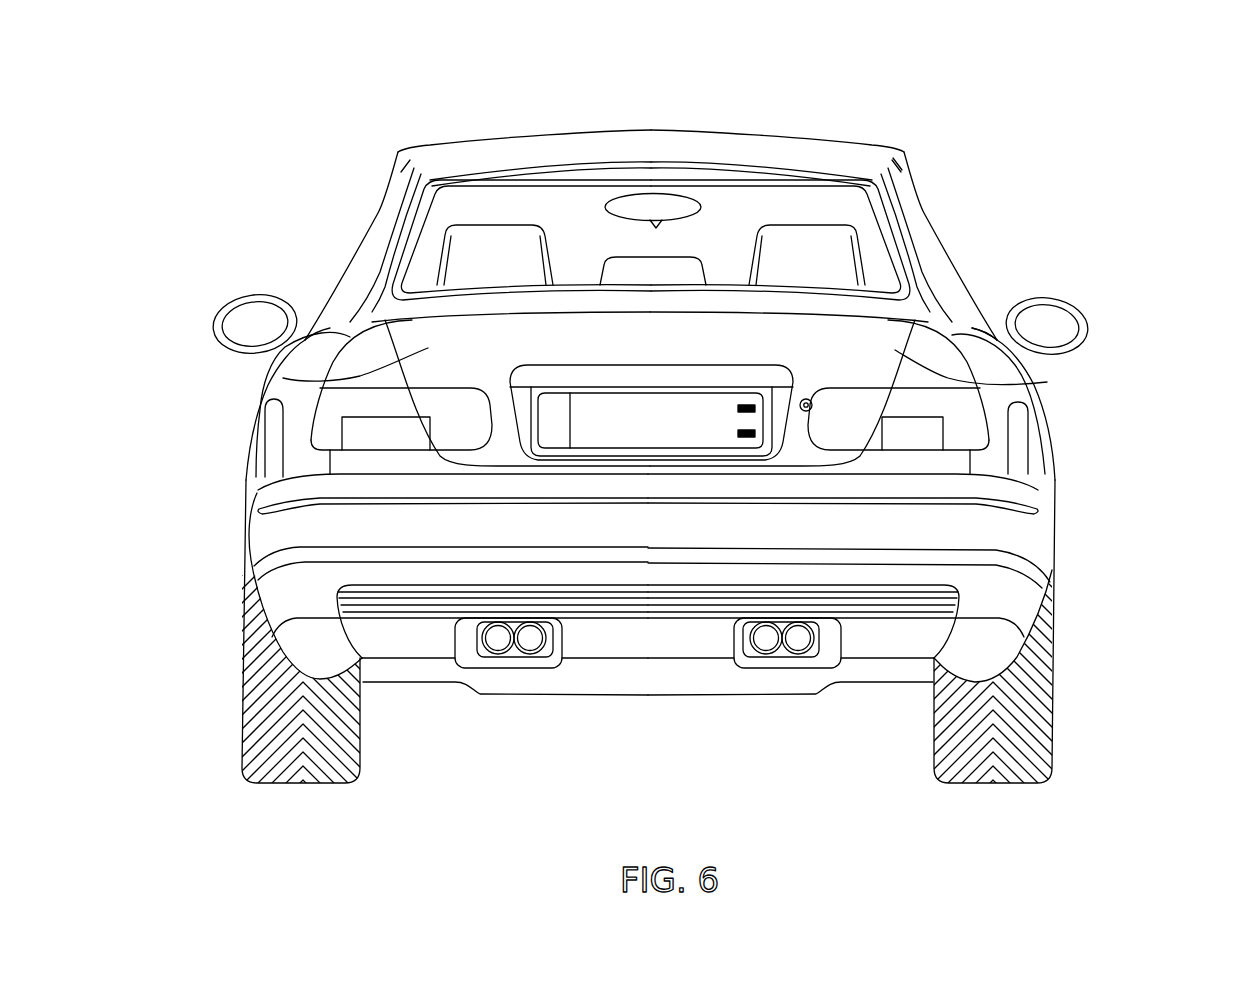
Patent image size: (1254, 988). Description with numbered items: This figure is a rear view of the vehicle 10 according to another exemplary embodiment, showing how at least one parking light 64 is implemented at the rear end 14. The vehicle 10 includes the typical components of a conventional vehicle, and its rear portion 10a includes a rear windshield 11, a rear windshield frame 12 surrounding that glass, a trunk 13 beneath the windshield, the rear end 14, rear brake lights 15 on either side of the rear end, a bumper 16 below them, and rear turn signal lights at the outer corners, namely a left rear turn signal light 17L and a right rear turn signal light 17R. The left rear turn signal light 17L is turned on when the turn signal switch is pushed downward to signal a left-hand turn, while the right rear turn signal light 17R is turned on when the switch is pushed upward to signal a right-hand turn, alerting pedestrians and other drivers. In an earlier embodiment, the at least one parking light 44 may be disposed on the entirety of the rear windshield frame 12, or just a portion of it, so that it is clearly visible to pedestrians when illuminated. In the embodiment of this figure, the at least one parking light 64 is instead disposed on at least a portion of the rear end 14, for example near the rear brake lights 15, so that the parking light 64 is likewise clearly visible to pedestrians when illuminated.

The vehicle 10 is at (1136, 93).
The rear portion 10a is at (1083, 163).
The rear windshield 11 is at (497, 197).
The rear windshield frame 12 is at (378, 245).
The trunk 13 is at (335, 274).
The rear end 14 is at (350, 463).
The rear brake lights 15 is at (337, 422).
The bumper 16 is at (308, 529).
The left rear turn signal light 17L is at (283, 378).
The right rear turn signal light 17R is at (1047, 382).
The parking light 44 is at (885, 185).
The parking light 64 is at (905, 430).